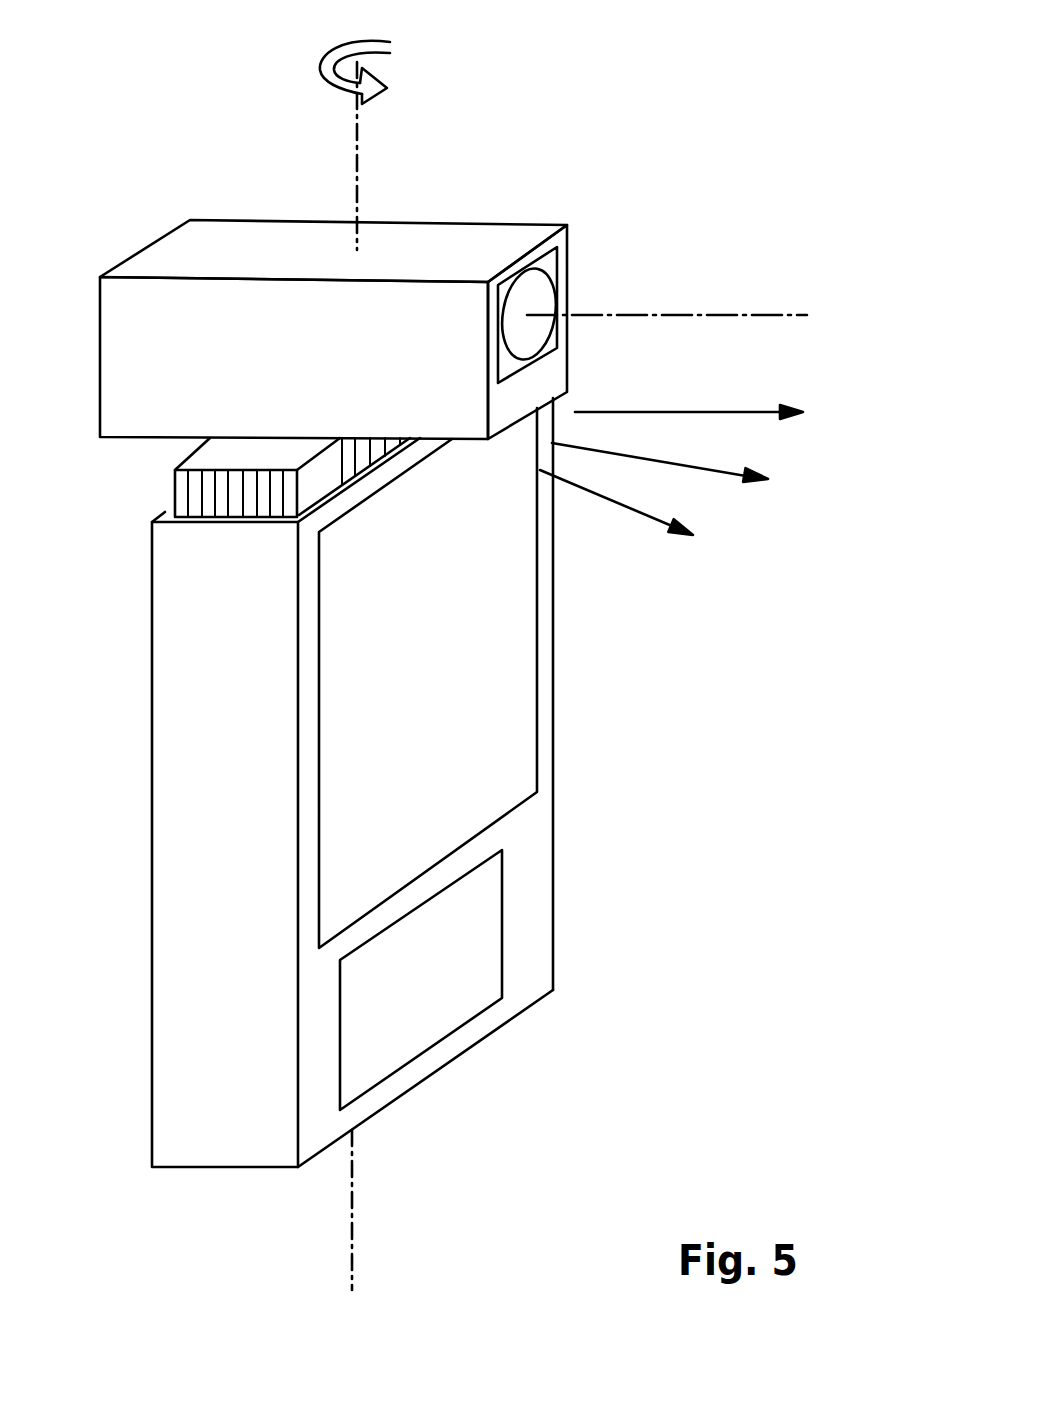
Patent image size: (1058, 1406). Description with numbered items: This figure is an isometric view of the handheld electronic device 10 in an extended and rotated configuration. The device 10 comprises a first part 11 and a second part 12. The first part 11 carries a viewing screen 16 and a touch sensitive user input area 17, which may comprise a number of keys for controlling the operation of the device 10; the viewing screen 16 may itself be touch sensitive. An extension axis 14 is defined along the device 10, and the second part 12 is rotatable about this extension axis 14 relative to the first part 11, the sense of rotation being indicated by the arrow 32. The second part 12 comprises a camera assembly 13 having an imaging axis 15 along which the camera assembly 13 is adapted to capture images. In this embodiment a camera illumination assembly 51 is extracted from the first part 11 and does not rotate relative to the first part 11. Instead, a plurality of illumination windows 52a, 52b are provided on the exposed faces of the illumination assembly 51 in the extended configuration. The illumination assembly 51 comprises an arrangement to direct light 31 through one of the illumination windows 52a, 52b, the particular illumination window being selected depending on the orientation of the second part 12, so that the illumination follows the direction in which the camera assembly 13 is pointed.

The handheld electronic device 10 is at (690, 150).
The first part 11 is at (555, 658).
The second part 12 is at (462, 228).
The camera assembly 13 is at (555, 265).
The extension axis 14 is at (357, 118).
The imaging axis 15 is at (777, 317).
The viewing screen 16 is at (425, 676).
The touch sensitive user input area 17 is at (403, 990).
The light 31 is at (660, 513).
The arrow 32 is at (355, 52).
The camera illumination assembly 51 is at (172, 487).
The illumination window 52a is at (223, 505).
The illumination window 52b is at (373, 450).